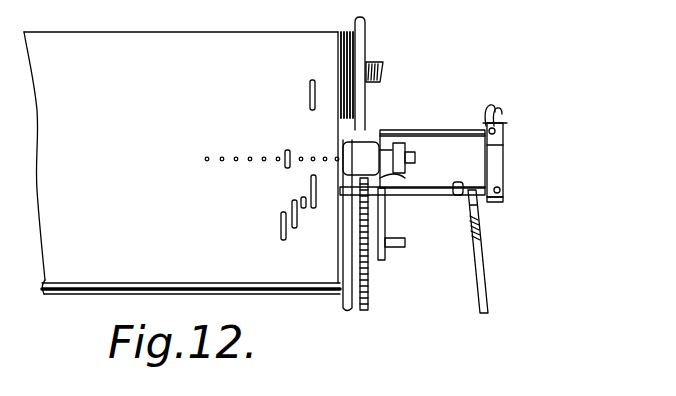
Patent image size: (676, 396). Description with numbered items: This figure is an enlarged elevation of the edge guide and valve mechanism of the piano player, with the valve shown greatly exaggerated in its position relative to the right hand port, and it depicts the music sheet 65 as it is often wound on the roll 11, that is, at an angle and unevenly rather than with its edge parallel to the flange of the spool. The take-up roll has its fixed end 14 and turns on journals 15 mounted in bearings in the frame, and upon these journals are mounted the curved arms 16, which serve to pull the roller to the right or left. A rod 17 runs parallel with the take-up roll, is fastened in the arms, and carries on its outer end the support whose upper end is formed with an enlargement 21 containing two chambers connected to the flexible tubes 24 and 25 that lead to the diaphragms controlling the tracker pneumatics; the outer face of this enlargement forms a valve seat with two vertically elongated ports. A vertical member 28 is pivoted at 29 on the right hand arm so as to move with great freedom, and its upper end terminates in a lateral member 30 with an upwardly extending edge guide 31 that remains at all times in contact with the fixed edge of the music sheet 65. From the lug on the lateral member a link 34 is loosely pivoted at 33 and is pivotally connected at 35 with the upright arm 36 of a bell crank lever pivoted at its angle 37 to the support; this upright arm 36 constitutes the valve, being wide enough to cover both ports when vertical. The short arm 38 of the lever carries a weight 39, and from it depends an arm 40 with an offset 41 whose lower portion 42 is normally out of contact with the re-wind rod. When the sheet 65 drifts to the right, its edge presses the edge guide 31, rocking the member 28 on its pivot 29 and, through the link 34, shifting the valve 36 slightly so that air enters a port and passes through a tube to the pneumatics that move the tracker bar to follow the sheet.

The music sheet 65 is at (182, 163).
The roll 11 is at (352, 78).
The fixed end 14 is at (342, 312).
The edge guide 31 is at (346, 120).
The lateral member 30 is at (382, 130).
The pivot 33 is at (368, 135).
The link 34 is at (405, 152).
The short arm 38 is at (468, 205).
The vertical member 28 is at (392, 160).
The weight 39 is at (455, 182).
The rod 17 is at (382, 196).
The pivot 29 is at (400, 182).
The enlargement 21 is at (503, 142).
The upright arm 36 is at (496, 162).
The pivot 37 is at (505, 190).
The pivotal connection 35 is at (506, 126).
The flexible tube 25 is at (492, 108).
The flexible tube 24 is at (502, 117).
The curved arm 16 is at (385, 228).
The journal 15 is at (393, 248).
The lower portion 42 is at (486, 276).
The offset 41 is at (460, 239).
The arm 40 is at (471, 224).